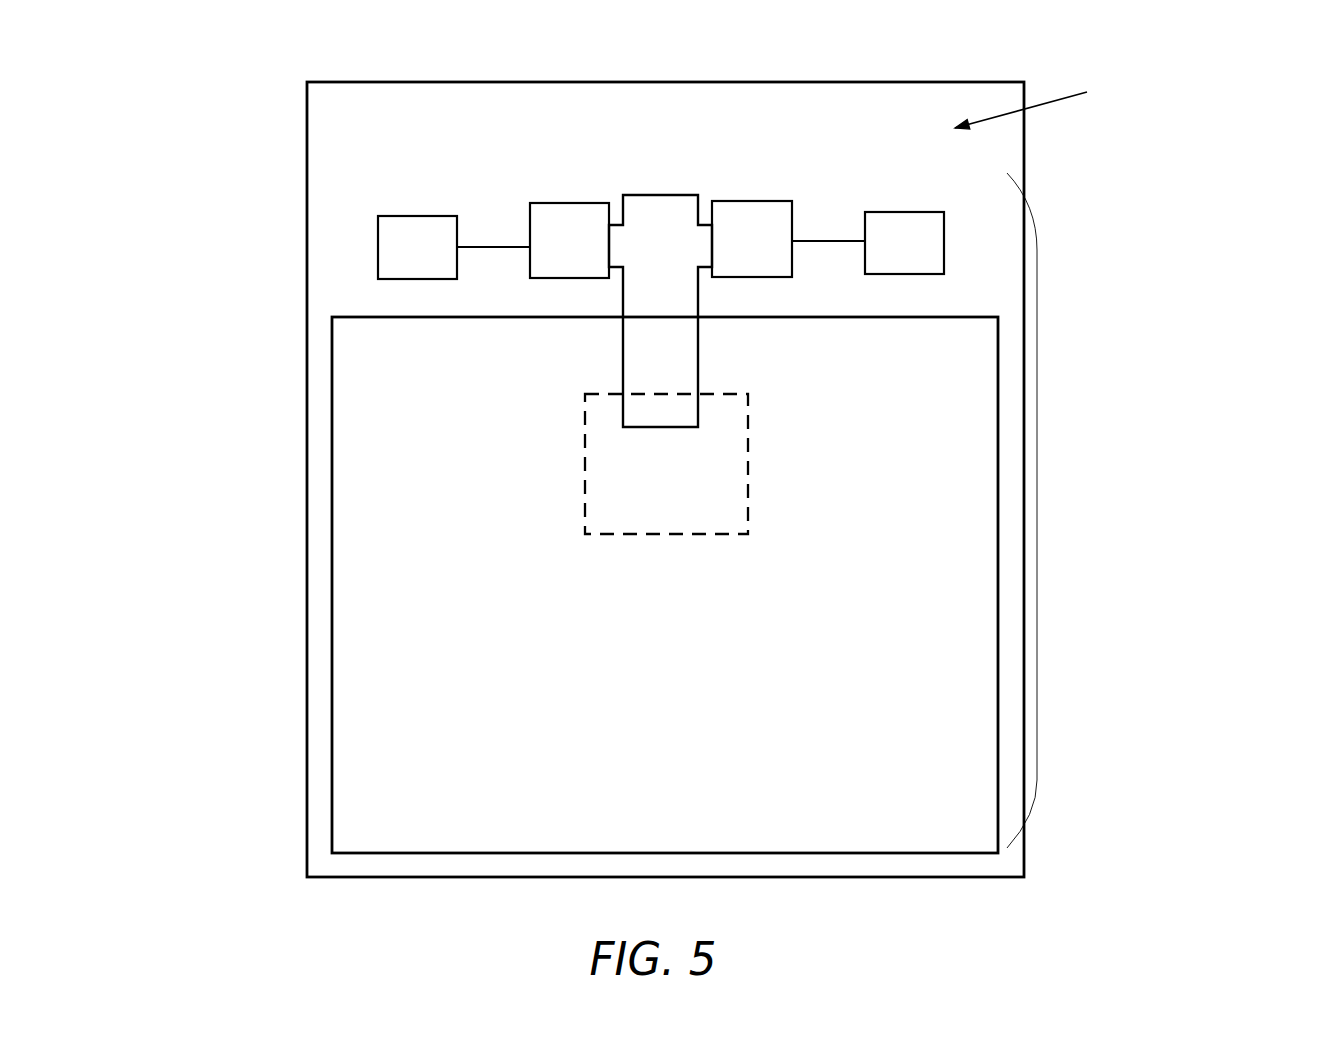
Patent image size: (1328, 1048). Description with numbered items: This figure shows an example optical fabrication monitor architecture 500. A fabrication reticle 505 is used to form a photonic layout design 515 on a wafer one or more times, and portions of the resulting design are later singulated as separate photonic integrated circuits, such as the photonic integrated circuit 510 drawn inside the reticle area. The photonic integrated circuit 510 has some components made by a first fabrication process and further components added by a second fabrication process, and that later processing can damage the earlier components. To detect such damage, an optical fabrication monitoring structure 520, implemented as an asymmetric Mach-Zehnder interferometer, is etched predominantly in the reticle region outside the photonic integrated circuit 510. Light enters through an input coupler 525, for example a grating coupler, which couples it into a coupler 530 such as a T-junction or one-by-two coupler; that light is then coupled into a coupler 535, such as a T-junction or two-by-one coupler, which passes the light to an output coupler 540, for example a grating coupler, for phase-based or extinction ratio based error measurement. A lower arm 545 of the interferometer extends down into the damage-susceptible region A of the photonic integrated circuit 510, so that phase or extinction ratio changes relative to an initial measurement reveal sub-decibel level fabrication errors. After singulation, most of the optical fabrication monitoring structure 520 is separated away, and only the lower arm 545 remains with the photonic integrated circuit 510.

The optical fabrication monitor architecture 500 is at (130, 122).
The fabrication reticle 505 is at (307, 176).
The photonic integrated circuit 510 is at (332, 422).
The photonic layout design 515 is at (1037, 513).
The optical fabrication monitoring structure 520 is at (450, 162).
The input coupler 525 is at (438, 258).
The coupler 530 is at (548, 254).
The coupler 535 is at (730, 252).
The output coupler 540 is at (883, 254).
The lower arm 545 is at (705, 355).